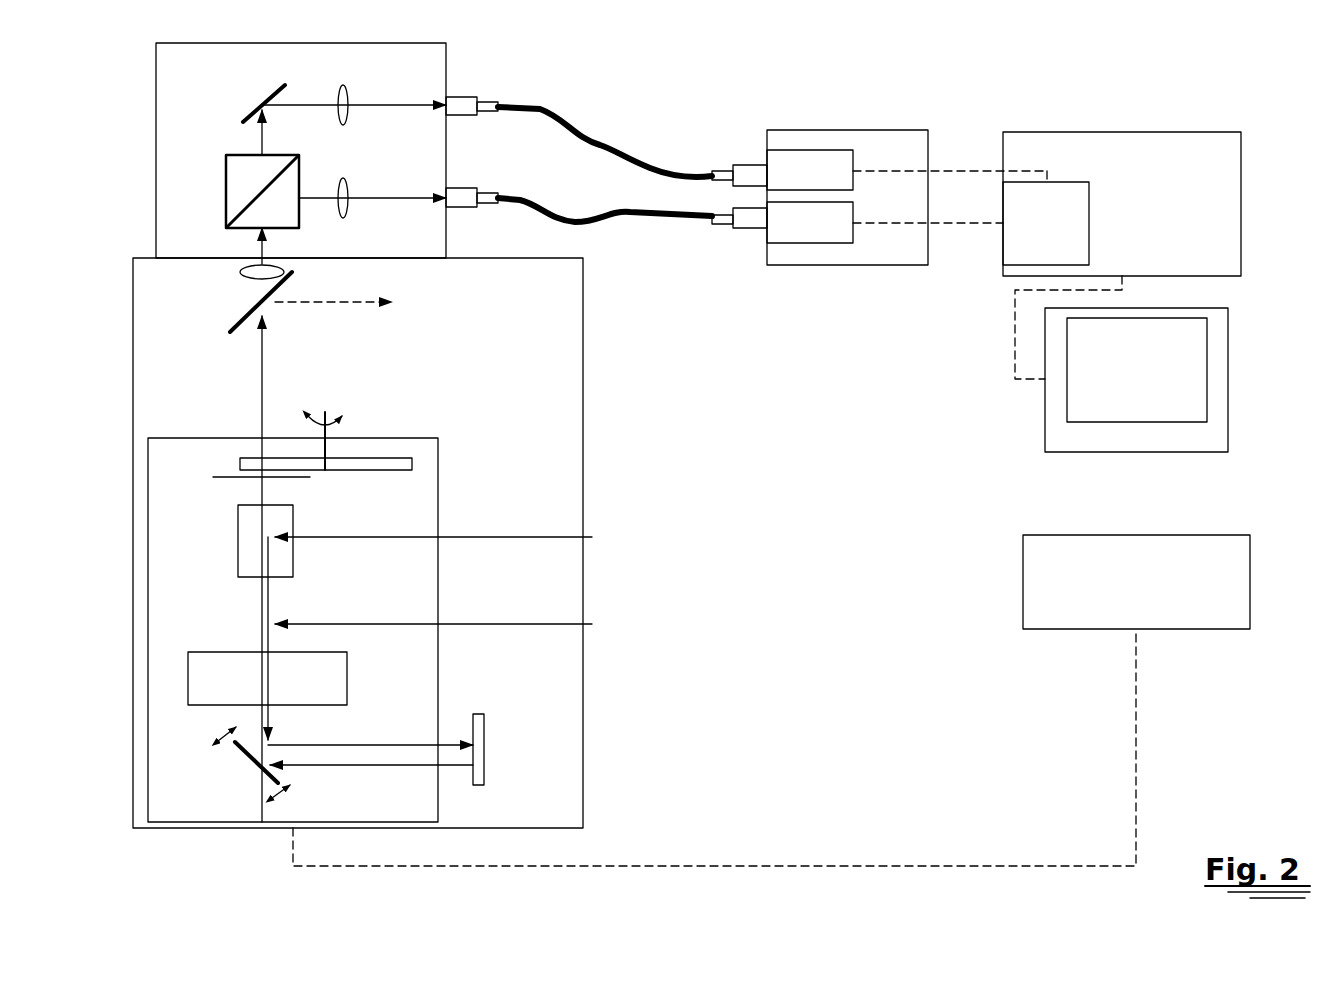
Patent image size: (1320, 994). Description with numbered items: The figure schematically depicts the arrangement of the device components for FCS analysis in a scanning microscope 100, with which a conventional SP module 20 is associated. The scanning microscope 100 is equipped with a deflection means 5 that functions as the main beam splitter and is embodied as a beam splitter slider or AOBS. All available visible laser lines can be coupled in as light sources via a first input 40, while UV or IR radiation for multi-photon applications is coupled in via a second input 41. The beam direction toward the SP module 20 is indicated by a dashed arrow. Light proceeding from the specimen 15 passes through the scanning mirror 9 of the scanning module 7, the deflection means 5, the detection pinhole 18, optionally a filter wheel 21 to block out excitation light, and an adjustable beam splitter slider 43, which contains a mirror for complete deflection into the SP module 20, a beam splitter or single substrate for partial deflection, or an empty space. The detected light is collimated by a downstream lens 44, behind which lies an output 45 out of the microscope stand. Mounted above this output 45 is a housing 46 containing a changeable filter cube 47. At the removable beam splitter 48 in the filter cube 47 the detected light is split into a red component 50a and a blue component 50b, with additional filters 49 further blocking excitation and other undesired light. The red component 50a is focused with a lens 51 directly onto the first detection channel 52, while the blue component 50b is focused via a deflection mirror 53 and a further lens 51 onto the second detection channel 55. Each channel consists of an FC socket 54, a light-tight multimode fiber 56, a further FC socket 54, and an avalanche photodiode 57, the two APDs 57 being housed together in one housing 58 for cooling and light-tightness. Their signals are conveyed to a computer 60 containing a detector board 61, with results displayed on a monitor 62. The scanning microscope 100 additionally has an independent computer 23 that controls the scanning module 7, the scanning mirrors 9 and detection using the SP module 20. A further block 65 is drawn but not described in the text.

The housing 46 is at (155, 77).
The multimode fiber 56 is at (595, 146).
The filter cube 47 is at (226, 192).
The additional filters 49 is at (305, 170).
The beam splitter 48 is at (258, 187).
The deflection mirror 53 is at (257, 105).
The lens 51 is at (342, 88).
The blue component 50b is at (415, 102).
The red component 50a is at (417, 162).
The output 45 is at (242, 264).
The lens 44 is at (283, 264).
The second detection channel 55 is at (460, 97).
The first detection channel 52 is at (468, 208).
The FC socket 54 is at (462, 110).
The housing 58 is at (835, 130).
The avalanche photodiode 57 is at (788, 175).
The computer 60 is at (1085, 132).
The detector board 61 is at (1090, 228).
The monitor 62 is at (1045, 412).
The scanning microscope 100 is at (584, 395).
The beam splitter slider 43 is at (235, 322).
The SP module 20 is at (355, 303).
The filter wheel 21 is at (377, 458).
The detection pinhole 18 is at (230, 478).
The deflection means 5 is at (238, 562).
The first input 40 is at (558, 537).
The second input 41 is at (558, 624).
The detector module 65 is at (188, 668).
The specimen 15 is at (485, 735).
The scanning mirror 9 is at (250, 762).
The scanning module 7 is at (214, 757).
The computer 23 is at (1136, 582).